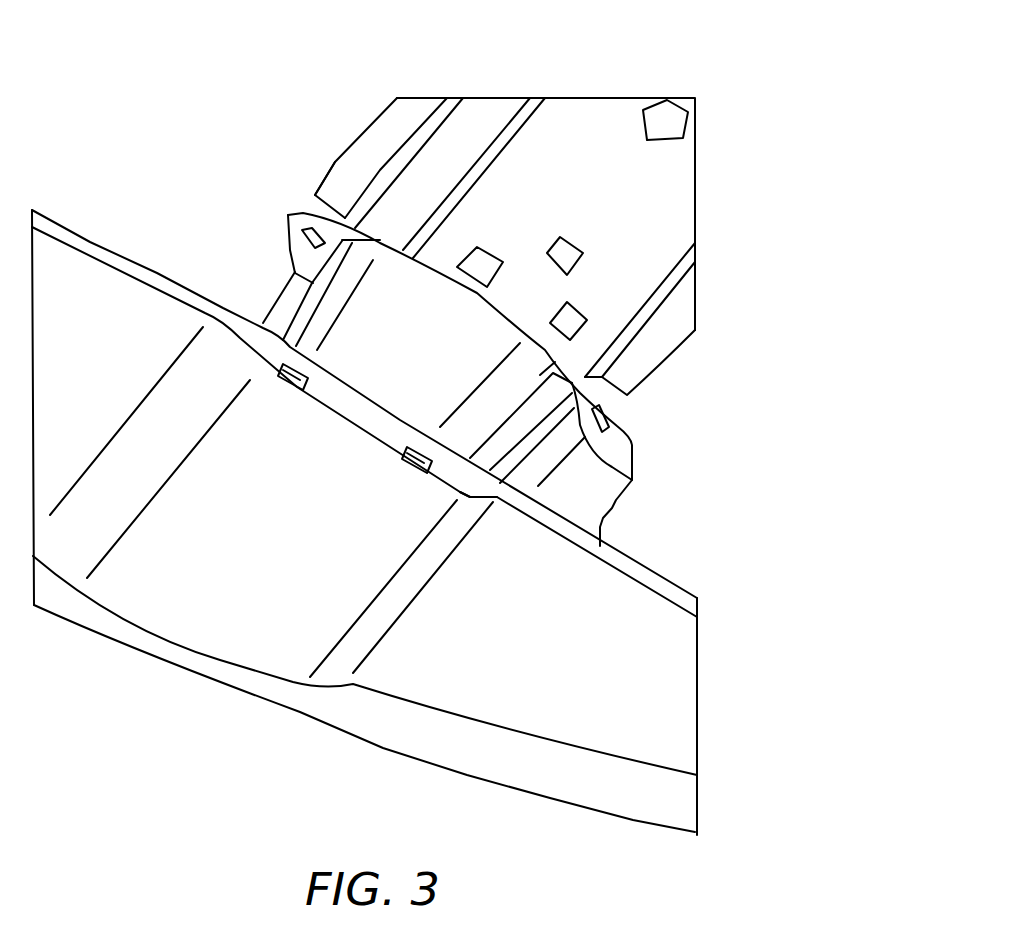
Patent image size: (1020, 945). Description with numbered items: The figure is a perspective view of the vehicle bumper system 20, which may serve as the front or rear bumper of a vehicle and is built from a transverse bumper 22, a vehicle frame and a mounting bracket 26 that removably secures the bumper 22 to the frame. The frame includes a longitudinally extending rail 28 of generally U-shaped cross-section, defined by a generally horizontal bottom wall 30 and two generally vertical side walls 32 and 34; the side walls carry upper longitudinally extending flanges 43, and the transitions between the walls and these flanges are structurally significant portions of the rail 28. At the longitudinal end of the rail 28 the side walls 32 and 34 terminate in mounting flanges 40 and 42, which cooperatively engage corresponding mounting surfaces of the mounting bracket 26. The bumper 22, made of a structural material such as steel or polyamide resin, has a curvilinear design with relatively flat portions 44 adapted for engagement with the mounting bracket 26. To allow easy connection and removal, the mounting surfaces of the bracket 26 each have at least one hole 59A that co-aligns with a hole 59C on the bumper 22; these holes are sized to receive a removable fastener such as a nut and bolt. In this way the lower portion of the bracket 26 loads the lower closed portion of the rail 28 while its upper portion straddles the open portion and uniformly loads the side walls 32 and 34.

The vehicle bumper system 20 is at (826, 134).
The transverse bumper 22 is at (420, 672).
The mounting bracket 26 is at (279, 297).
The rail 28 is at (700, 286).
The bottom wall 30 is at (590, 123).
The side wall 32 is at (656, 274).
The side wall 34 is at (473, 177).
The mounting flange 40 is at (610, 443).
The mounting flange 42 is at (300, 258).
The upper longitudinally extending flange 43 is at (407, 122).
The flat portion 44 is at (617, 552).
The hole 59A is at (303, 216).
The hole 59C is at (293, 393).